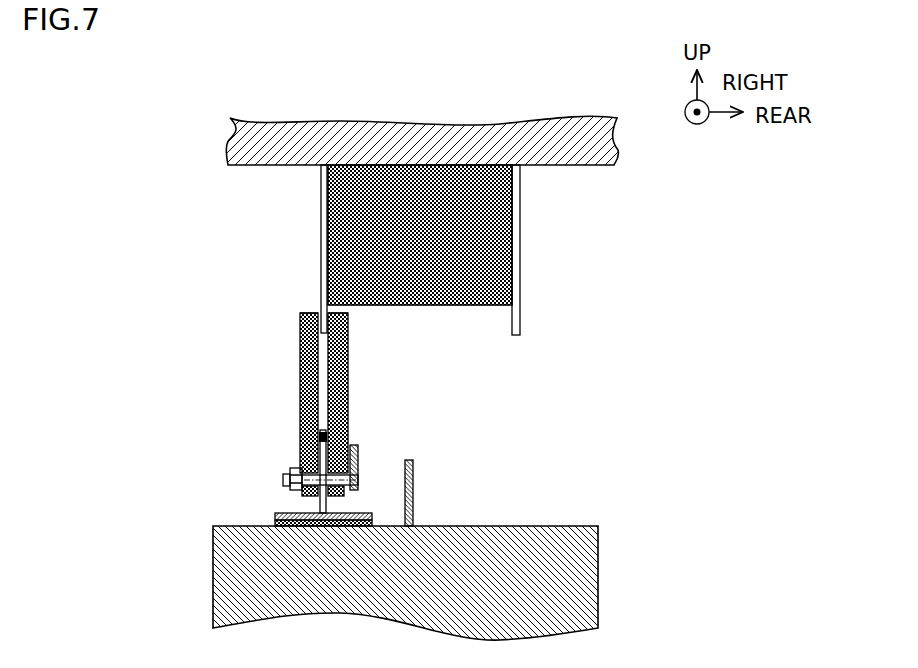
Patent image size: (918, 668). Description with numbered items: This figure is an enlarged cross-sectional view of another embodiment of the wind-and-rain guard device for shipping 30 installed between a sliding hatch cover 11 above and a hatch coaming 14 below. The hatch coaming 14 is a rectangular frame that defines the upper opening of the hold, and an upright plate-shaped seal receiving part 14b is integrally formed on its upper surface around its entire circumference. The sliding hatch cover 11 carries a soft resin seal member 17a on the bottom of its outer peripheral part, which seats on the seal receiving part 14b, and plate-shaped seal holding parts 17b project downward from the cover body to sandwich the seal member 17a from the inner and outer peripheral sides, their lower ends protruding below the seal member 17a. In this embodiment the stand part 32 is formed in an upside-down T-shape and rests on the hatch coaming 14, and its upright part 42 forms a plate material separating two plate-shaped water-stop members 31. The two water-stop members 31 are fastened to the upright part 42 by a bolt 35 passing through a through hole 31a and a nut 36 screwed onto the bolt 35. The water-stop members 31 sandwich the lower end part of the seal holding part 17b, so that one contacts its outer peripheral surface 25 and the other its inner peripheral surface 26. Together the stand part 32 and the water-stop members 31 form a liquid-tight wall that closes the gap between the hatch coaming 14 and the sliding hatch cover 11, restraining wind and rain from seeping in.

The sliding hatch cover 11 is at (630, 185).
The hatch coaming 14 is at (599, 516).
The seal receiving part 14b is at (409, 459).
The seal member 17a is at (452, 308).
The seal holding part 17b is at (321, 293).
The outer peripheral surface 25 is at (301, 313).
The inner peripheral surface 26 is at (347, 312).
The wind-and-rain guard device for shipping 30 is at (318, 418).
The water-stop member 31 is at (353, 382).
The through hole 31a is at (305, 496).
The stand part 32 is at (281, 510).
The bolt 35 is at (357, 478).
The nut 36 is at (292, 470).
The upright part 42 is at (326, 432).